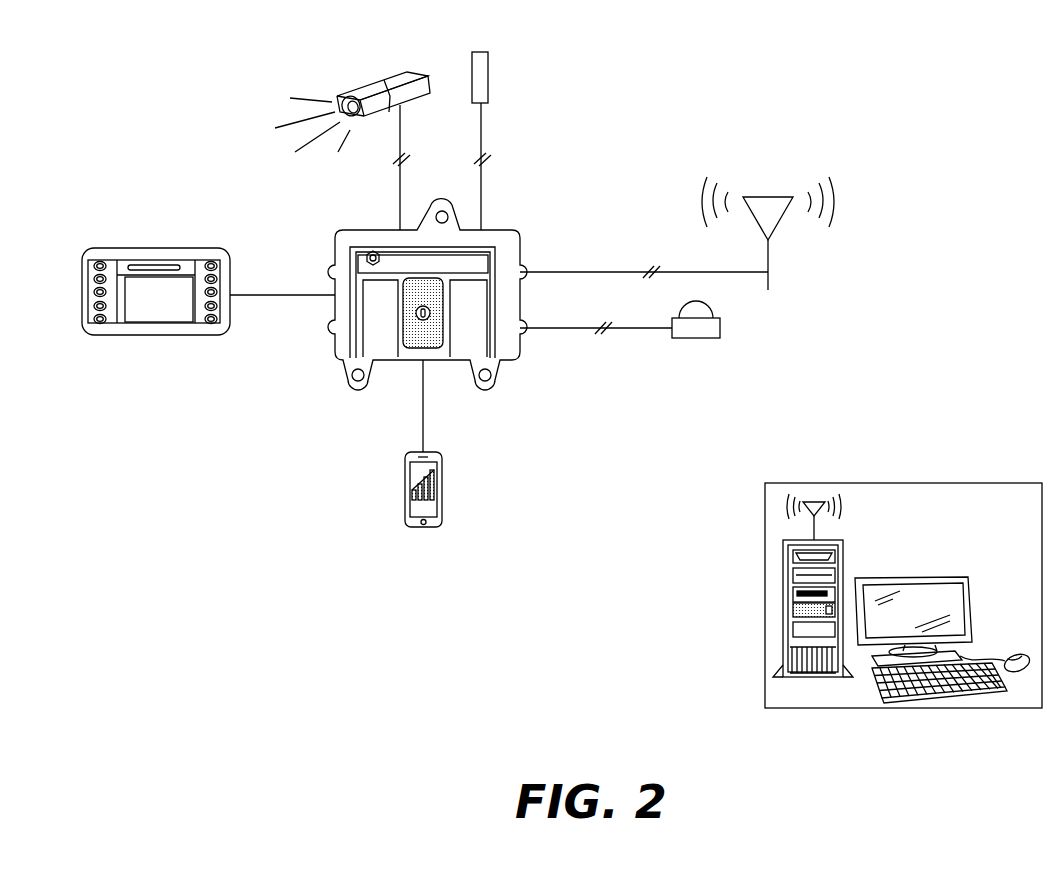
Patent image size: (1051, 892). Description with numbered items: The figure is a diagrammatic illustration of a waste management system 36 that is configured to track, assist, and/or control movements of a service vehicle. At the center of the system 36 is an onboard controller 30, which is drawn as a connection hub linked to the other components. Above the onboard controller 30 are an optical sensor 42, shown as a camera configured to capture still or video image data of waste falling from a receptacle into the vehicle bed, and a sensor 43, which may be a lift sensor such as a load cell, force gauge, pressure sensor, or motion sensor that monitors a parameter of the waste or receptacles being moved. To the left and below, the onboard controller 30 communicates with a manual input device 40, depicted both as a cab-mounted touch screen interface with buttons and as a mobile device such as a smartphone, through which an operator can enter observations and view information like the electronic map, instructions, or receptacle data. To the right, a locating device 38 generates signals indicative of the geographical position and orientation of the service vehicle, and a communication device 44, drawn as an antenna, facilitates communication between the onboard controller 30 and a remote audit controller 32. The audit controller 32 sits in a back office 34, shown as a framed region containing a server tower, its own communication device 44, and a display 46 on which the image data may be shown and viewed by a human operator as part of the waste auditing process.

The onboard controller 30 is at (518, 235).
The audit controller 32 is at (845, 566).
The back office 34 is at (763, 660).
The waste management system 36 is at (730, 77).
The locating device 38 is at (722, 334).
The manual input device 40 is at (197, 248).
The optical sensor 42 is at (394, 75).
The sensor 43 is at (490, 72).
The communication device 44 is at (770, 256).
The display 46 is at (907, 626).